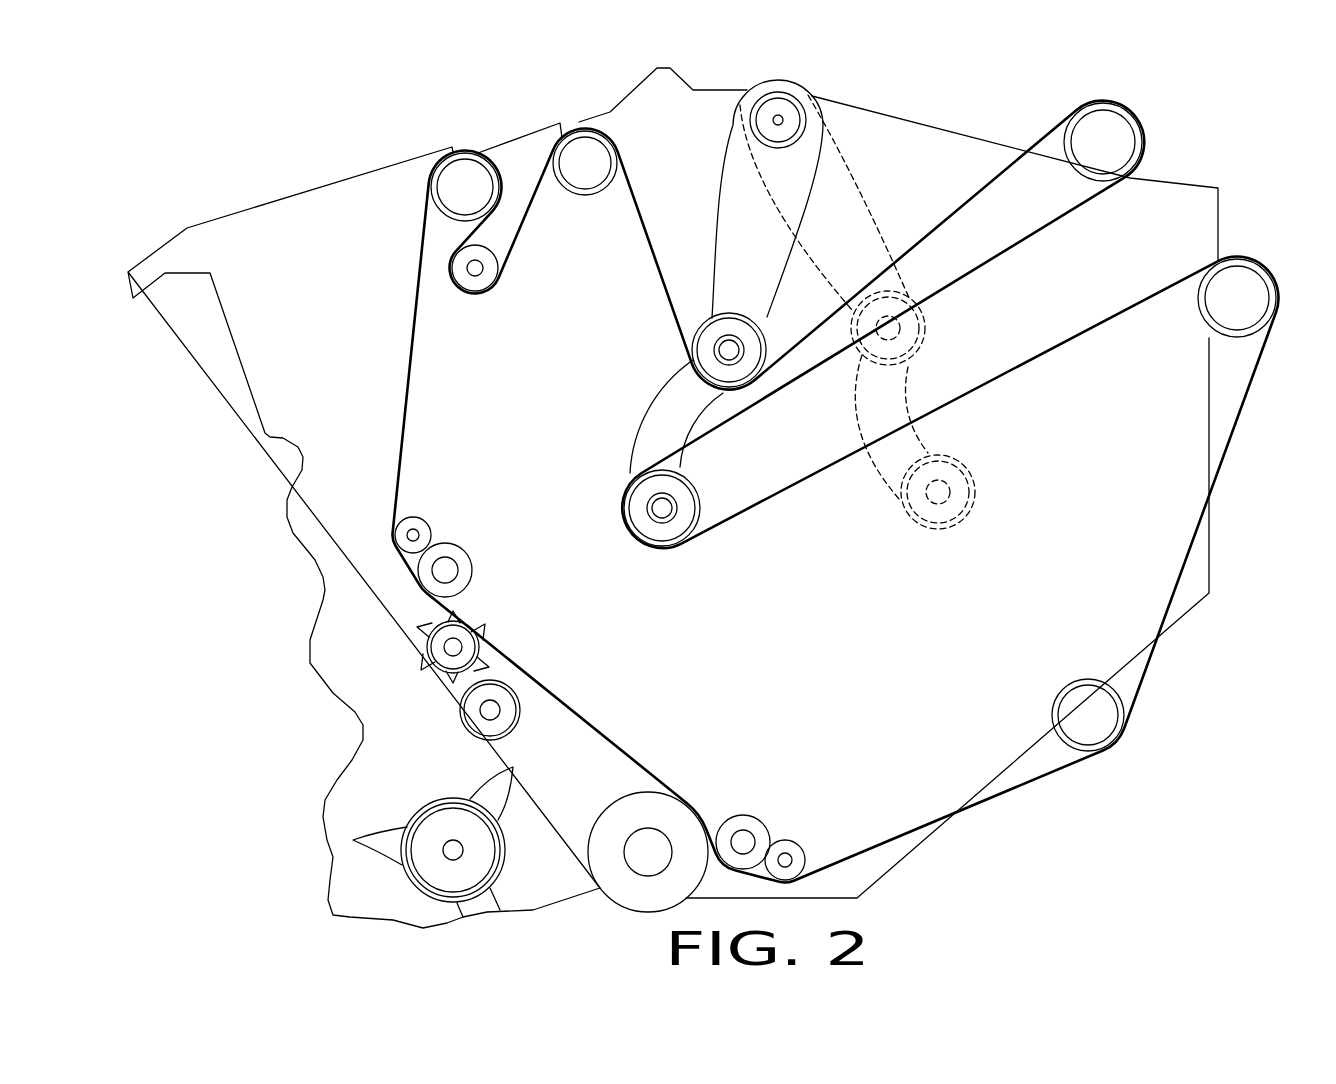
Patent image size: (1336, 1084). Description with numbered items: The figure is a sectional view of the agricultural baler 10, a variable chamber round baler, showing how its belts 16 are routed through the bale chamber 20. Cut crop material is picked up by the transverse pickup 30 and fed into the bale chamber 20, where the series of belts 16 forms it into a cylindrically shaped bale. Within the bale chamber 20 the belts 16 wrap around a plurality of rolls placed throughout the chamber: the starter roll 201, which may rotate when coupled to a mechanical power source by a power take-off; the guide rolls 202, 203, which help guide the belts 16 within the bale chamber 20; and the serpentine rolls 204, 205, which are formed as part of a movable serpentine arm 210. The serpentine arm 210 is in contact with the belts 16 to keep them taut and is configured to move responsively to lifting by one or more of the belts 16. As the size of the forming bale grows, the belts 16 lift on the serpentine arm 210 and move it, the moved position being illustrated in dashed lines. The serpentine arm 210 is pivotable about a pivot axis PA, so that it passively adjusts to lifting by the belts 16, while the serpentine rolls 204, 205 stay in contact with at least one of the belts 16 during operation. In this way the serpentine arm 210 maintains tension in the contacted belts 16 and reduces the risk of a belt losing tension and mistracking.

The agricultural baler 10 is at (1099, 770).
The belts 16 is at (938, 222).
The bale chamber 20 is at (398, 205).
The transverse pickup 30 is at (372, 887).
The starter roll 201 is at (505, 722).
The guide roll 202 is at (1084, 700).
The guide roll 203 is at (465, 173).
The serpentine roll 204 is at (712, 338).
The serpentine roll 205 is at (645, 517).
The serpentine arm 210 is at (812, 190).
The pivot axis PA is at (779, 117).